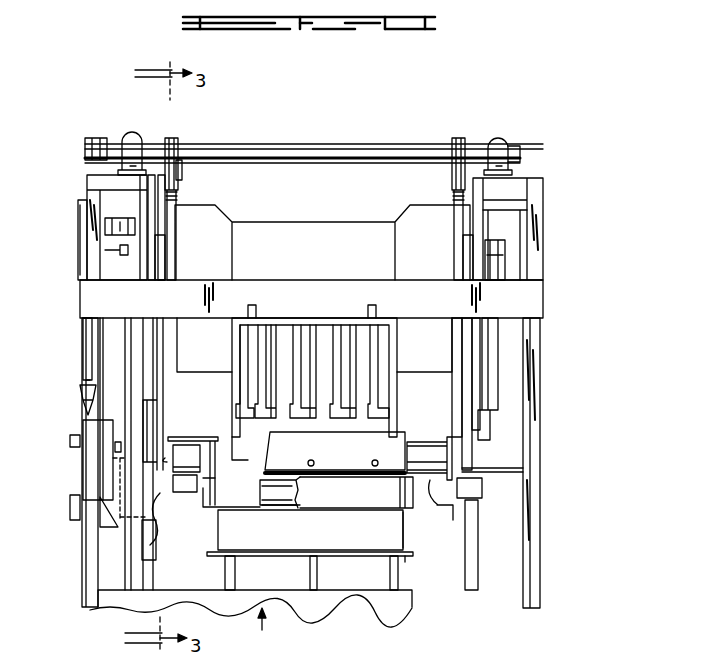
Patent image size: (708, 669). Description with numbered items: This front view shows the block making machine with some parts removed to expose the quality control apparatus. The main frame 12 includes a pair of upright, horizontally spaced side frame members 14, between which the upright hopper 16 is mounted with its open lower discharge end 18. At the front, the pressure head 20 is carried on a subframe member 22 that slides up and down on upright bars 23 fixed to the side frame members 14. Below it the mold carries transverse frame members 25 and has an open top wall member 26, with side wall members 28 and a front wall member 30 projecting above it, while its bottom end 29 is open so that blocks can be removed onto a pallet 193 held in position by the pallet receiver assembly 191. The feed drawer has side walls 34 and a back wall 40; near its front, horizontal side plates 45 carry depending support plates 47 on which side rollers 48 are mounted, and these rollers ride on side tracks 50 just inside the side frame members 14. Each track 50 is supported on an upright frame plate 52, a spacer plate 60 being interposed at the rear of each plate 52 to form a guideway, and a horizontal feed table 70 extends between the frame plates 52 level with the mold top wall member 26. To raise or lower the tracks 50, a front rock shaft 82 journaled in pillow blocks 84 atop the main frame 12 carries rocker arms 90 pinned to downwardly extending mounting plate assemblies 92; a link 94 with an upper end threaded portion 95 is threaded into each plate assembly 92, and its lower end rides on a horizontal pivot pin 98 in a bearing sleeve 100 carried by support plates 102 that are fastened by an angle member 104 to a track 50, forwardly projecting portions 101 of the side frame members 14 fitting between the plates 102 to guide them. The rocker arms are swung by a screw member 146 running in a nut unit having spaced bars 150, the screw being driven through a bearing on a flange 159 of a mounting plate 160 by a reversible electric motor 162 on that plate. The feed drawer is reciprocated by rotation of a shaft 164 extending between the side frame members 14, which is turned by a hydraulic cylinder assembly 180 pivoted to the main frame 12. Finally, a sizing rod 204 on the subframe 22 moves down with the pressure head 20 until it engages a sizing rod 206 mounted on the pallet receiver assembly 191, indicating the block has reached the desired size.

The main frame 12 is at (480, 518).
The side frame members 14 is at (150, 222).
The hopper 16 is at (397, 257).
The lower discharge end 18 is at (233, 462).
The pressure head 20 is at (378, 352).
The subframe member 22 is at (550, 302).
The upright bars 23 is at (92, 187).
The transverse frame members 25 is at (207, 554).
The open top wall member 26 is at (265, 508).
The side wall members 28 is at (208, 500).
The bottom end 29 is at (350, 575).
The front wall member 30 is at (346, 478).
The side walls 34 is at (215, 480).
The back wall 40 is at (268, 456).
The side plates 45 is at (198, 432).
The support plates 47 is at (181, 458).
The side rollers 48 is at (430, 452).
The side tracks 50 is at (403, 523).
The upright frame plate 52 is at (153, 520).
The spacer plate 60 is at (185, 485).
The feed table 70 is at (402, 537).
The front rock shaft 82 is at (343, 148).
The pillow blocks 84 is at (134, 133).
The rocker arms 90 is at (175, 140).
The mounting plate assemblies 92 is at (180, 165).
The link 94 is at (170, 245).
The upper end threaded portion 95 is at (178, 193).
The horizontal pivot pin 98 is at (160, 410).
The bearing sleeve 100 is at (80, 408).
The forwardly projecting portions 101 is at (118, 462).
The support plates 102 is at (480, 468).
The angle member 104 is at (150, 532).
The screw member 146 is at (86, 340).
The bars 150 is at (80, 245).
The flange 159 is at (72, 440).
The mounting plate 160 is at (105, 484).
The reversible electric motor 162 is at (72, 511).
The shaft 164 is at (505, 252).
The hydraulic cylinder assembly 180 is at (490, 360).
The pallet receiver assembly 191 is at (276, 628).
The pallet 193 is at (409, 560).
The sizing rod 204 is at (118, 448).
The sizing rod 206 is at (110, 530).